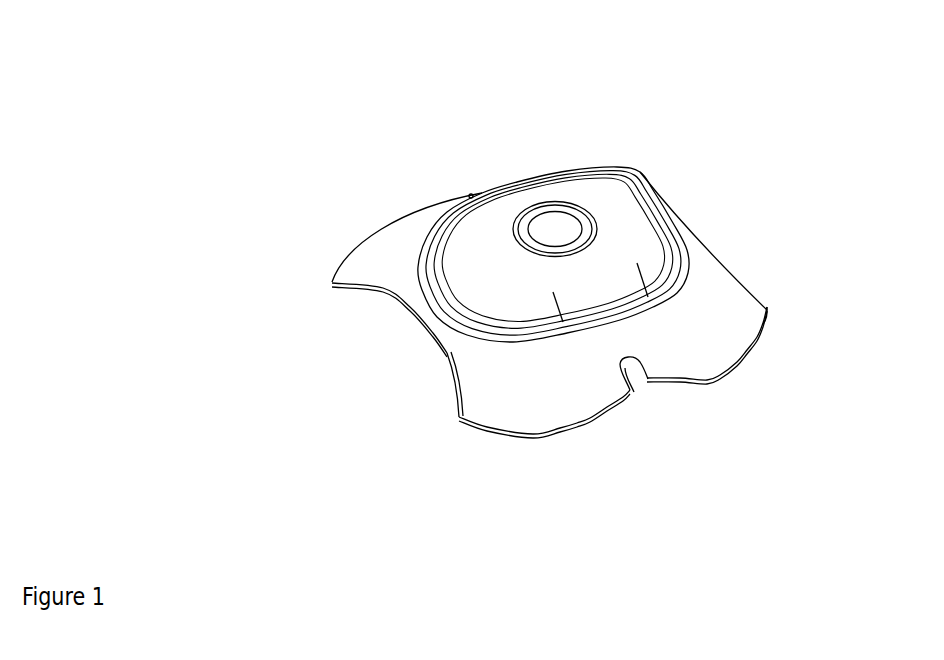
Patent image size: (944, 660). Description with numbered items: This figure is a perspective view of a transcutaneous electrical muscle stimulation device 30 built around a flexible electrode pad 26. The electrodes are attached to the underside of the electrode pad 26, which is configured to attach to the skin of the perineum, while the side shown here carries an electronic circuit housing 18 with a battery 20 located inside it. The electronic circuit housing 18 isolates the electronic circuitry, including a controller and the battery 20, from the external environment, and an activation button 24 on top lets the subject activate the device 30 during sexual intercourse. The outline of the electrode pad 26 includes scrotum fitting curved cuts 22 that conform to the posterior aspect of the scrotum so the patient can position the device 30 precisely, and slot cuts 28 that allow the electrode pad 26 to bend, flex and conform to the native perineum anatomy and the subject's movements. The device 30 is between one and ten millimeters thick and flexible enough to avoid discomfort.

The electronic circuit housing 18 is at (599, 198).
The battery 20 is at (521, 222).
The scrotum fitting curved cuts 22 is at (446, 349).
The activation button 24 is at (558, 223).
The electrode pad 26 is at (718, 293).
The slot cuts 28 is at (466, 197).
The transcutaneous electrical muscle stimulation device 30 is at (300, 183).